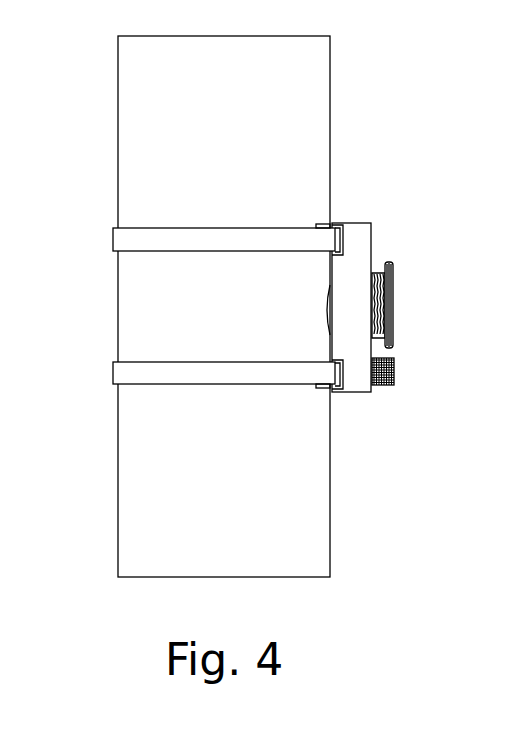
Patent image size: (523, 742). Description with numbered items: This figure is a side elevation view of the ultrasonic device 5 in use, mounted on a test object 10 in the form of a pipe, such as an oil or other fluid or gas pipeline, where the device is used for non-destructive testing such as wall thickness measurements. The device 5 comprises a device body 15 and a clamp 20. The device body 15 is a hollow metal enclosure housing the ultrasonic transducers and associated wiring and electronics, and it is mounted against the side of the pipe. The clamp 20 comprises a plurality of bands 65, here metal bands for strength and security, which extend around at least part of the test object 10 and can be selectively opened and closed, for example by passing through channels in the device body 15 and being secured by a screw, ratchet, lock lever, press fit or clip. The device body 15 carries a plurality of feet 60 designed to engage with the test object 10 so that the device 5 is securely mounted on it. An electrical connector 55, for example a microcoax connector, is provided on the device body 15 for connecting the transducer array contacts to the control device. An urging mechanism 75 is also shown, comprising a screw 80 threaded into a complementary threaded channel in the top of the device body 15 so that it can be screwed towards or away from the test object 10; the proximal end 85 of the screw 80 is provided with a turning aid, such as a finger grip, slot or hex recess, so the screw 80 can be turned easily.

The ultrasonic device 5 is at (402, 323).
The test object 10 is at (312, 94).
The device body 15 is at (358, 232).
The clamp 20 is at (113, 240).
The electrical connector 55 is at (395, 368).
The feet 60 is at (315, 228).
The bands 65 is at (191, 276).
The urging mechanism 75 is at (421, 293).
The screw 80 is at (378, 305).
The proximal end 85 is at (393, 318).